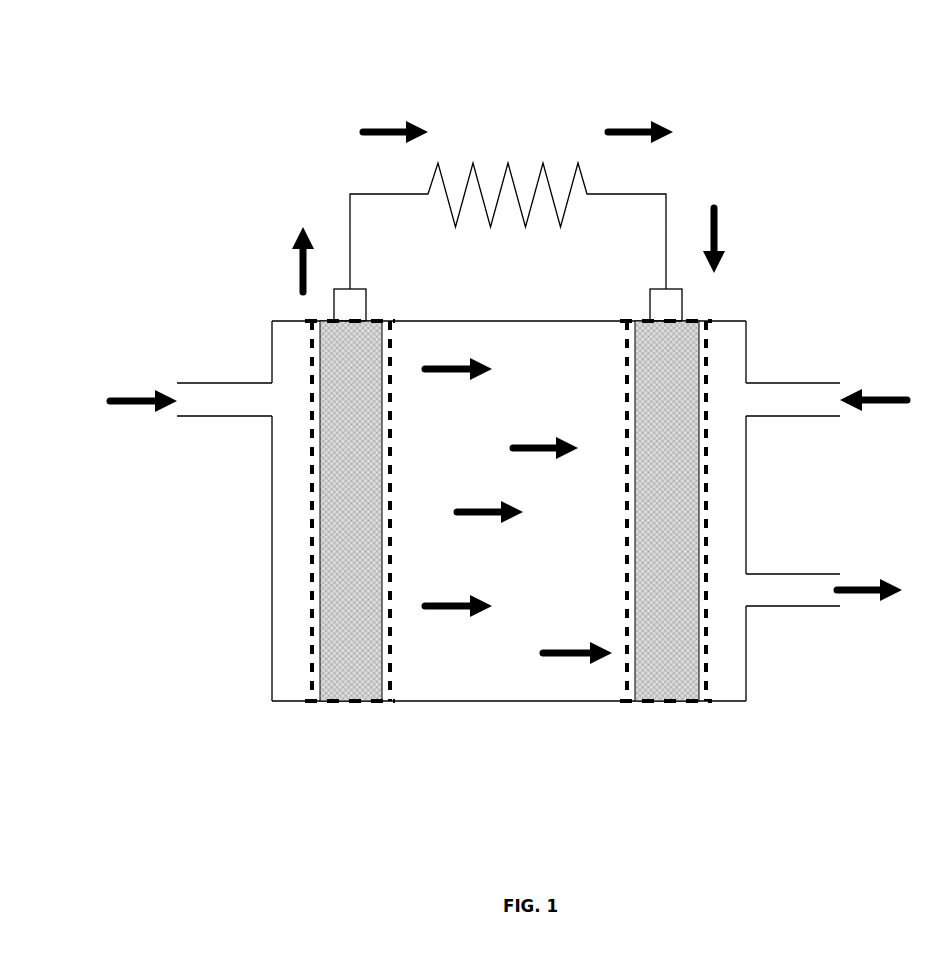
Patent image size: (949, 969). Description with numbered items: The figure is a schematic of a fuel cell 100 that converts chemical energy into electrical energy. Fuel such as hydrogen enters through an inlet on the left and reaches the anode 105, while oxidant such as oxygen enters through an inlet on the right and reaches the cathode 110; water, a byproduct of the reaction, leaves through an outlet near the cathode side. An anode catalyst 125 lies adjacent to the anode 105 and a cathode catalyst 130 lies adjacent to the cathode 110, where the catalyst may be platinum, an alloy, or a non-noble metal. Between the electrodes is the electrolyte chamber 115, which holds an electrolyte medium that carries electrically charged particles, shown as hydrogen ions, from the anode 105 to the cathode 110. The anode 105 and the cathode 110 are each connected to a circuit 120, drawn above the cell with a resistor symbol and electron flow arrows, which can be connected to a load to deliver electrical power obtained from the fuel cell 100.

The fuel cell 100 is at (808, 100).
The anode 105 is at (383, 701).
The cathode 110 is at (667, 701).
The electrolyte chamber 115 is at (461, 683).
The circuit 120 is at (479, 206).
The anode catalyst 125 is at (312, 495).
The cathode catalyst 130 is at (707, 512).